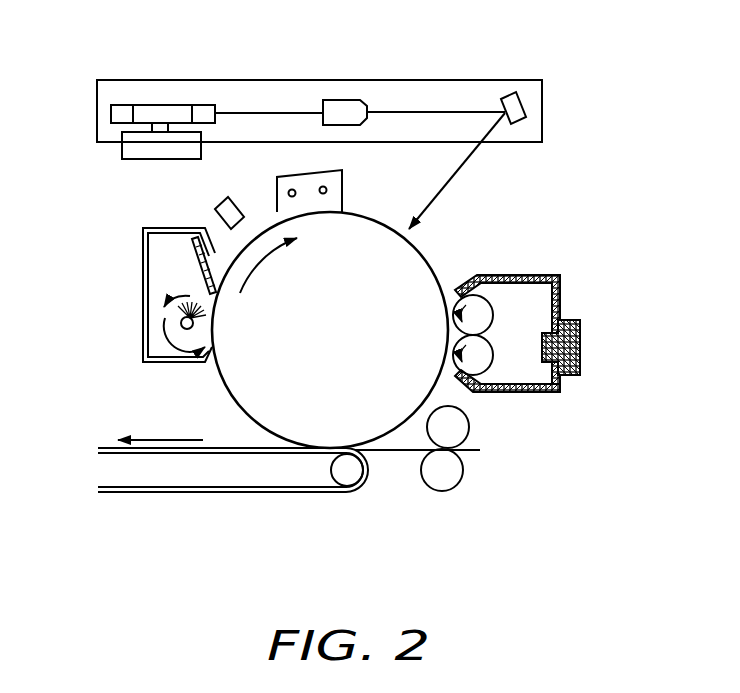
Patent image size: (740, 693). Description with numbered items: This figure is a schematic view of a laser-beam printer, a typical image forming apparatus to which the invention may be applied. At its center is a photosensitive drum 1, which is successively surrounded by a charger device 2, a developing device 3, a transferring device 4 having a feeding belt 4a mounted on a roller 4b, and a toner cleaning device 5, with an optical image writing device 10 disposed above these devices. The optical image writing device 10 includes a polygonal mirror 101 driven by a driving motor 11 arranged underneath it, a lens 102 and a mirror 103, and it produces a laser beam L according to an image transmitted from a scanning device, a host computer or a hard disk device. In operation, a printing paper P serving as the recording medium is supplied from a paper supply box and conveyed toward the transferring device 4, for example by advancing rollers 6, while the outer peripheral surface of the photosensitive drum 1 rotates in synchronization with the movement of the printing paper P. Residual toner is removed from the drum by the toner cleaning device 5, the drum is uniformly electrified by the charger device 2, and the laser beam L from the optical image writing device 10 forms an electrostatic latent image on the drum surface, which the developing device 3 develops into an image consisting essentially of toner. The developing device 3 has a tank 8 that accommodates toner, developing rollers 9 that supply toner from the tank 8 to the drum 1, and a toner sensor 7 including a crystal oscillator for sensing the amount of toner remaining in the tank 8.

The photosensitive drum 1 is at (232, 395).
The charger device 2 is at (345, 178).
The developing device 3 is at (546, 325).
The transferring device 4 is at (233, 523).
The feeding belt 4a is at (142, 492).
The roller 4b is at (349, 475).
The toner cleaning device 5 is at (143, 295).
The advancing rollers 6 is at (448, 493).
The toner sensor 7 is at (583, 350).
The tank 8 is at (528, 393).
The developing rollers 9 is at (480, 298).
The optical image writing device 10 is at (319, 116).
The polygonal mirror 101 is at (146, 108).
The lens 102 is at (342, 105).
The mirror 103 is at (512, 97).
The driving motor 11 is at (143, 160).
The laser beam L is at (460, 177).
The printing paper P is at (398, 455).